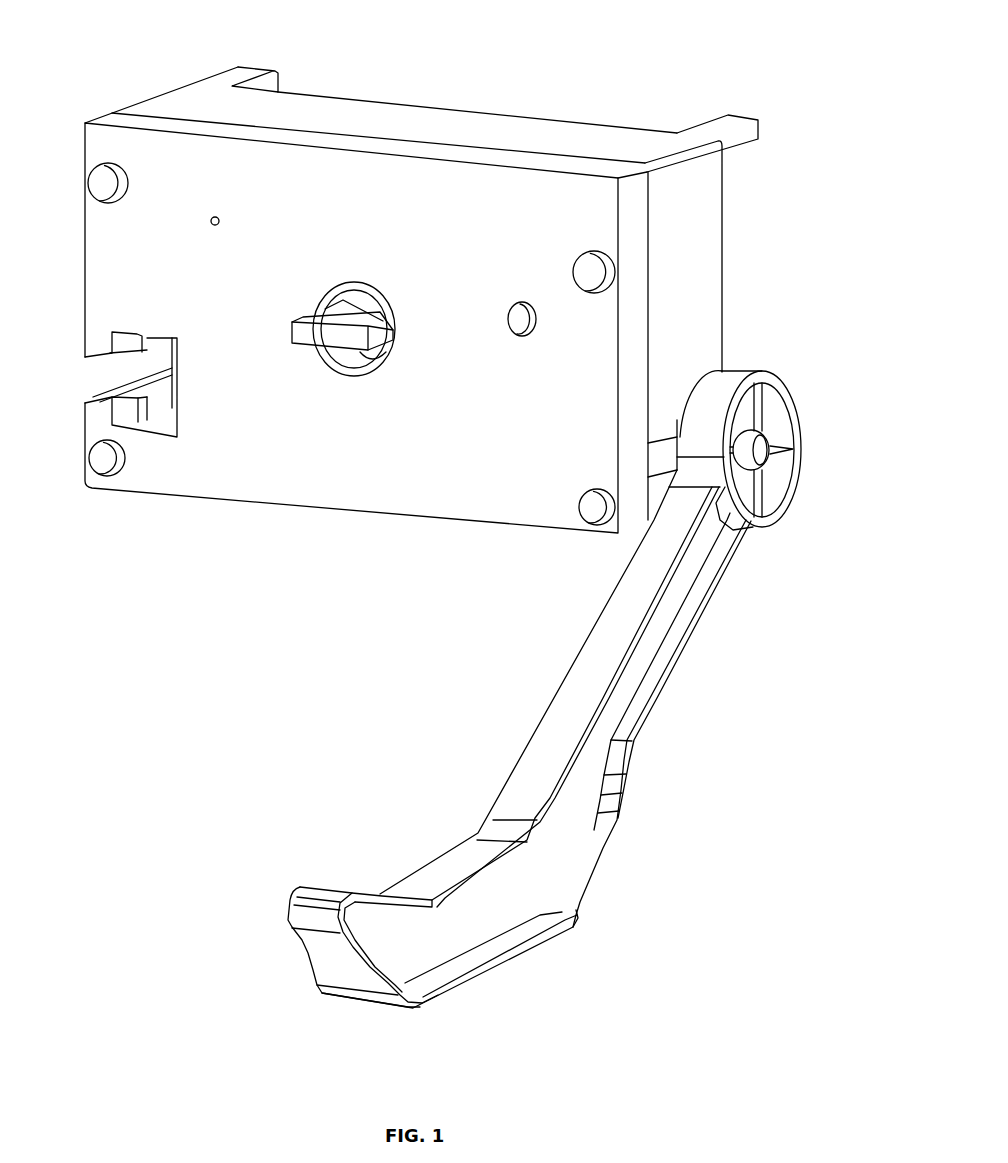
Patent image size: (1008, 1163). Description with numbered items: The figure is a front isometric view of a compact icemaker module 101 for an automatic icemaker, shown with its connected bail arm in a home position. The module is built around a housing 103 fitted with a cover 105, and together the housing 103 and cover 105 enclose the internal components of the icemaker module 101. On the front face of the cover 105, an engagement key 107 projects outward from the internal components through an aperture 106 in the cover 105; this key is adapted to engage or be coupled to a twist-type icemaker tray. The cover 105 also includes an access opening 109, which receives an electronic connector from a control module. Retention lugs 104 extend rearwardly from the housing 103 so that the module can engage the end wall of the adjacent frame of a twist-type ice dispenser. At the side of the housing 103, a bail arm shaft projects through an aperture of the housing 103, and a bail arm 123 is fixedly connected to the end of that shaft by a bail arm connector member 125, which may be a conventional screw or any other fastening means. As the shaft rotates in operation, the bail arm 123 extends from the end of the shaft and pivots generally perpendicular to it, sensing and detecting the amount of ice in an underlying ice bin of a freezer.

The compact icemaker module 101 is at (158, 77).
The housing 103 is at (725, 213).
The retention lugs 104 is at (268, 70).
The cover 105 is at (323, 508).
The aperture 106 is at (368, 356).
The engagement key 107 is at (312, 346).
The access opening 109 is at (152, 435).
The bail arm 123 is at (700, 630).
The bail arm connector member 125 is at (768, 432).